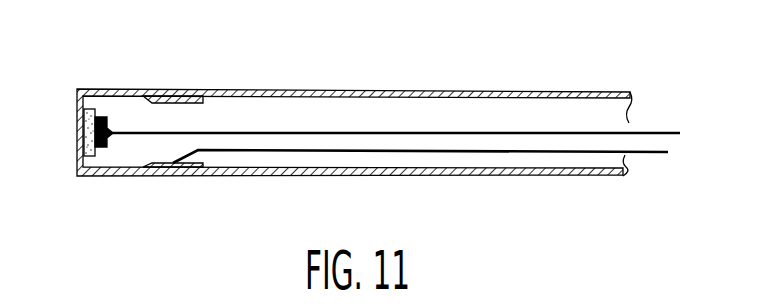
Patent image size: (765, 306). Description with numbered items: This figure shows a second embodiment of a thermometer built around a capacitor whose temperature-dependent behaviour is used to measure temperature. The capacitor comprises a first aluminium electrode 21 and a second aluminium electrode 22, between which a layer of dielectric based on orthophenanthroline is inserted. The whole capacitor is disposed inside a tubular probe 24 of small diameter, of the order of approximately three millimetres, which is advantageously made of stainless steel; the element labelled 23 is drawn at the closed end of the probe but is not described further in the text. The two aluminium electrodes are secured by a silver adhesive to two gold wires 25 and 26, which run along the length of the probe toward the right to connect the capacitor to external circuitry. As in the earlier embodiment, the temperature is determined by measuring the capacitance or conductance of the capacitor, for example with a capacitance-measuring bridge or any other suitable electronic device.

The first aluminium electrode 21 is at (77, 123).
The second aluminium electrode 22 is at (101, 116).
The sheath end 23 is at (85, 172).
The tubular probe 24 is at (358, 92).
The gold wire 25 is at (482, 133).
The gold wire 26 is at (652, 155).